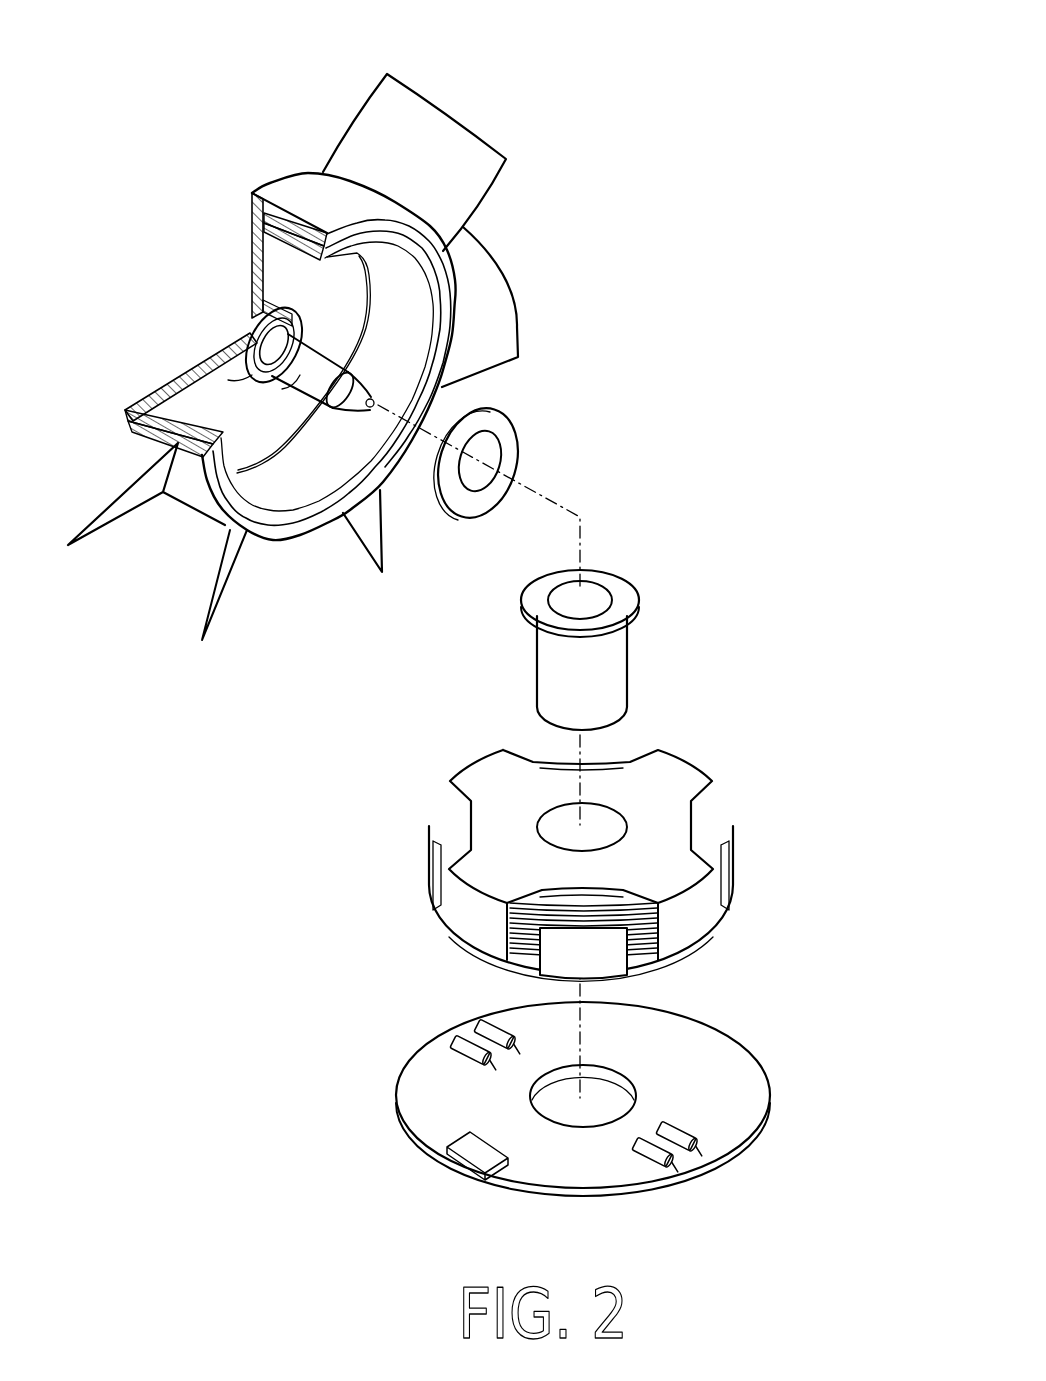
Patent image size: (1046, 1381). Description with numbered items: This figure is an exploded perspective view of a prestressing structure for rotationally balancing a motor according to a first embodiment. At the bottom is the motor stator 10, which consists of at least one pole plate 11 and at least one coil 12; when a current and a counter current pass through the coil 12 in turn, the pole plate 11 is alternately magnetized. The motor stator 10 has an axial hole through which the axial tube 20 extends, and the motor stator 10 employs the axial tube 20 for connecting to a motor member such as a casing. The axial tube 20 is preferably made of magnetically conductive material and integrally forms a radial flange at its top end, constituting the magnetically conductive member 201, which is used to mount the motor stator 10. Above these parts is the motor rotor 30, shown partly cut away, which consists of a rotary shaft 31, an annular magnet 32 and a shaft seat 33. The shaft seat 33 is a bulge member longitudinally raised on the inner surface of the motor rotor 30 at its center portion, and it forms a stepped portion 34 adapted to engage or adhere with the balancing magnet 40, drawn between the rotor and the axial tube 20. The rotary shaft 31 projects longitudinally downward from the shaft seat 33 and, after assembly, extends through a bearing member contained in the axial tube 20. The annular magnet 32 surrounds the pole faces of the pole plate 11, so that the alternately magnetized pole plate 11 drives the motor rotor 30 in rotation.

The motor rotor 30 is at (293, 339).
The rotary shaft 31 is at (315, 373).
The annular magnet 32 is at (275, 494).
The shaft seat 33 is at (258, 292).
The stepped portion 34 is at (218, 366).
The balancing magnet 40 is at (507, 430).
The axial tube 20 is at (632, 628).
The magnetically conductive member 201 is at (617, 583).
The motor stator 10 is at (649, 834).
The pole plate 11 is at (677, 828).
The coil 12 is at (657, 937).